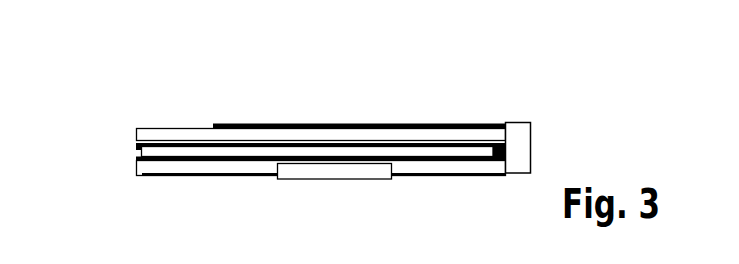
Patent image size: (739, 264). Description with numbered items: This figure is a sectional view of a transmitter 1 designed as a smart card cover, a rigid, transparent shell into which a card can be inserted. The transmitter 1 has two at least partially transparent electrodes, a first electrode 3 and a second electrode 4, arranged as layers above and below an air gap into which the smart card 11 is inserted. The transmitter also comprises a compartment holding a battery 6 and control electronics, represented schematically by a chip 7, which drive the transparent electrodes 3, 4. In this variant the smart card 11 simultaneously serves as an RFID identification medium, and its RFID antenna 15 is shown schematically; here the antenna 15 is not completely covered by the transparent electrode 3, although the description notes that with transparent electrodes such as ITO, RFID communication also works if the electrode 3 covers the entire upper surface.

The transmitter 1 is at (152, 140).
The first electrode 3 is at (427, 124).
The second electrode 4 is at (445, 175).
The battery 6 is at (303, 174).
The chip 7 is at (533, 128).
The smart card 11 is at (148, 153).
The RFID antenna 15 is at (141, 148).